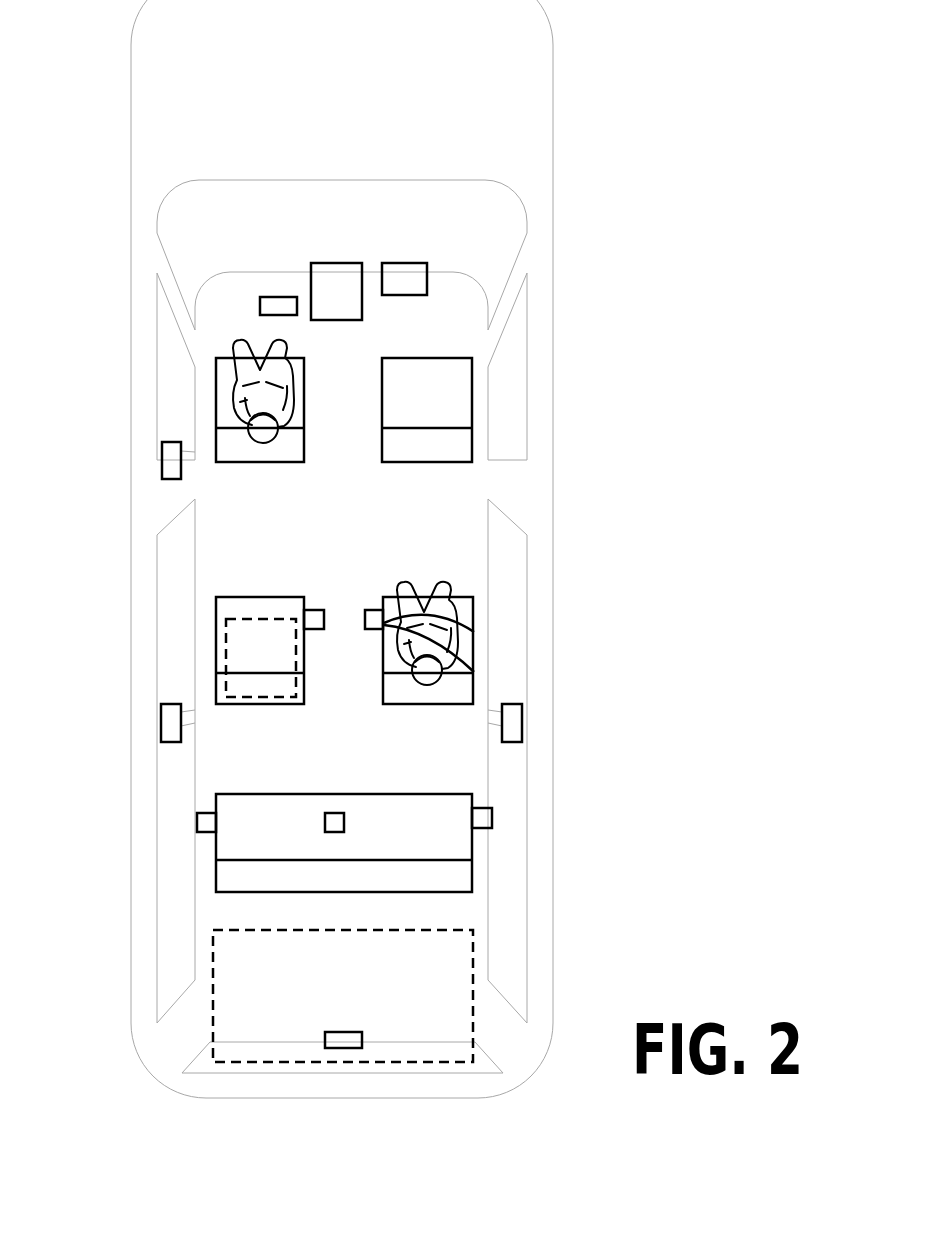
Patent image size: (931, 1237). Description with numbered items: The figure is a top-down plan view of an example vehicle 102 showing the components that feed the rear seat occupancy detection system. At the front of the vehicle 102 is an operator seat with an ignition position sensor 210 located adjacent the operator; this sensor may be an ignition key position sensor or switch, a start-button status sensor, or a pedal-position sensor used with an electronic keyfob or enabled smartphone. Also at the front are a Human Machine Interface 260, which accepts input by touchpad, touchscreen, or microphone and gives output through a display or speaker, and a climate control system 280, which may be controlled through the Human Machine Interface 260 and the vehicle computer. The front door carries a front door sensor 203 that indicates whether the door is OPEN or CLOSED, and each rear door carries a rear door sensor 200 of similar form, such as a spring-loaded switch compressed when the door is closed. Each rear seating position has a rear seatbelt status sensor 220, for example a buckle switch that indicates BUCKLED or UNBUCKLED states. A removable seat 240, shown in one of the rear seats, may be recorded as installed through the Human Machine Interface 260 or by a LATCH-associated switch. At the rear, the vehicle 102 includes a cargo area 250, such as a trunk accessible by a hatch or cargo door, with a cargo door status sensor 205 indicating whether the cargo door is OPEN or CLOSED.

The vehicle 102 is at (553, 83).
The rear door sensor 200 is at (160, 722).
The front door sensor 203 is at (160, 461).
The cargo door status sensor 205 is at (338, 1032).
The ignition position sensor 210 is at (275, 297).
The rear seatbelt status sensor 220 is at (565, 865).
The removable seat 240 is at (224, 649).
The cargo area 250 is at (473, 989).
The Human Machine Interface (HMI) 260 is at (363, 280).
The climate control system 280 is at (426, 283).